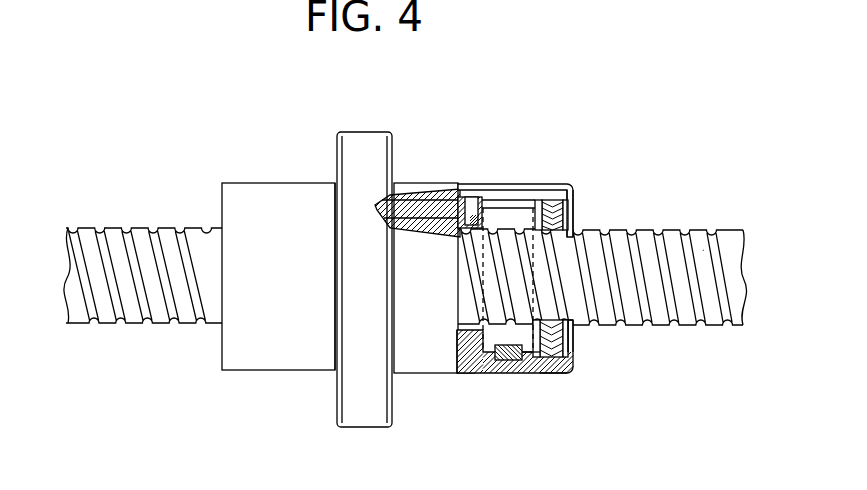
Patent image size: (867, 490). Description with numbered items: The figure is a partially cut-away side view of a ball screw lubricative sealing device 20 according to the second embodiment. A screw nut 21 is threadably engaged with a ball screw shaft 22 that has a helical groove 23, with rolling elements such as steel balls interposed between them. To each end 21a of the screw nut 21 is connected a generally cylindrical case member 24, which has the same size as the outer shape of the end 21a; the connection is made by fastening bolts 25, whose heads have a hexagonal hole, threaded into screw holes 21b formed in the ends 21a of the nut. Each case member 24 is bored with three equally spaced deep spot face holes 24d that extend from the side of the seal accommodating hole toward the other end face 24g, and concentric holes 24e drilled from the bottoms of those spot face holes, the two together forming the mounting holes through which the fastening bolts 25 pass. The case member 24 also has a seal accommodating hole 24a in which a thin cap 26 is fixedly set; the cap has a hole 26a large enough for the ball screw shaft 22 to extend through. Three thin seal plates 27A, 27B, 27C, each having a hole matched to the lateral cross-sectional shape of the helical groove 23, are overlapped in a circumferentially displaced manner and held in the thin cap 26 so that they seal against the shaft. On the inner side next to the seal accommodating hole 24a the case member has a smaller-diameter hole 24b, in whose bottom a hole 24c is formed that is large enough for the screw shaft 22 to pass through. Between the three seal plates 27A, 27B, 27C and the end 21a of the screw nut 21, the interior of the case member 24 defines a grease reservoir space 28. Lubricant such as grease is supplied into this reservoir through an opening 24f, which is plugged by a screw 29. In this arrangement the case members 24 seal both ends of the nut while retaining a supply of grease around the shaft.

The ball screw lubricative sealing device 20 is at (300, 92).
The screw nut 21 is at (418, 345).
The end of the screw nut 21a is at (332, 343).
The screw hole 21b is at (391, 160).
The ball screw shaft 22 is at (110, 238).
The helical groove 23 is at (703, 250).
The case member 24 is at (228, 202).
The seal accommodating hole 24a is at (577, 350).
The smaller-diameter hole 24b is at (556, 374).
The shaft through hole 24c is at (507, 372).
The deep spot face hole 24d is at (487, 190).
The concentric hole 24e is at (428, 189).
The lubricant supply opening 24f is at (526, 372).
The other end face of the case member 24g is at (460, 373).
The fastening bolt 25 is at (458, 190).
The thin cap 26 is at (572, 212).
The hole of the thin cap 26a is at (574, 343).
The thin seal plate 27A is at (527, 190).
The thin seal plate 27B is at (543, 190).
The thin seal plate 27C is at (553, 190).
The grease reservoir space 28 is at (498, 190).
The screw 29 is at (535, 373).